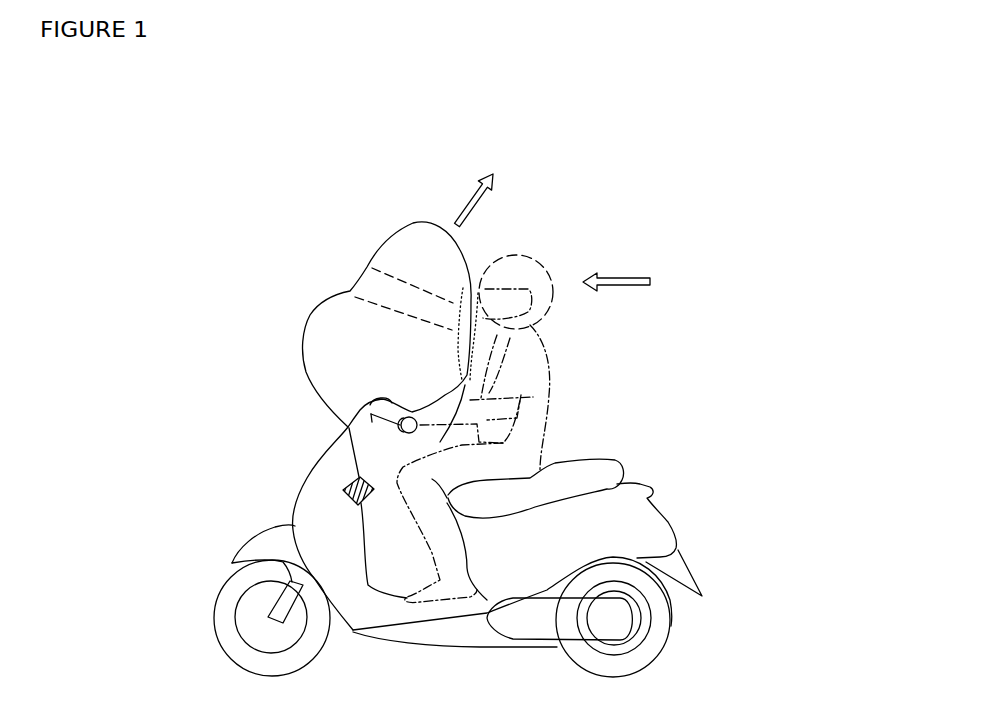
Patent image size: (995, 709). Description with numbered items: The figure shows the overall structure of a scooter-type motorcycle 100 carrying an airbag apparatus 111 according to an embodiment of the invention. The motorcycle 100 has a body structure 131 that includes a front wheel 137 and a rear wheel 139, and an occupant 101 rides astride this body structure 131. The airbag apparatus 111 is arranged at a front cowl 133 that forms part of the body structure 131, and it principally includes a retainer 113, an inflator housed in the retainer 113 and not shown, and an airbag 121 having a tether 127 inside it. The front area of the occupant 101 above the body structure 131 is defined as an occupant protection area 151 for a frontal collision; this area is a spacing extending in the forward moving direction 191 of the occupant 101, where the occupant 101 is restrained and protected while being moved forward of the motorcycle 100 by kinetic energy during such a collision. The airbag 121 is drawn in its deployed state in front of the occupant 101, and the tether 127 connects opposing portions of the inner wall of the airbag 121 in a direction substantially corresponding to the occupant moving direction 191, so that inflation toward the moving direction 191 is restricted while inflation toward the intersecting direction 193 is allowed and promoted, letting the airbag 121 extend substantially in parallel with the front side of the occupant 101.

The motorcycle 100 is at (690, 515).
The occupant 101 is at (533, 412).
The airbag apparatus 111 is at (338, 477).
The retainer 113 is at (350, 501).
The airbag 121 is at (322, 340).
The tether 127 is at (395, 277).
The body structure 131 is at (637, 444).
The front cowl 133 is at (340, 457).
The front wheel 137 is at (226, 625).
The rear wheel 139 is at (657, 637).
The occupant protection area 151 is at (490, 260).
The forward moving direction 191 is at (649, 280).
The intersecting direction 193 is at (500, 190).